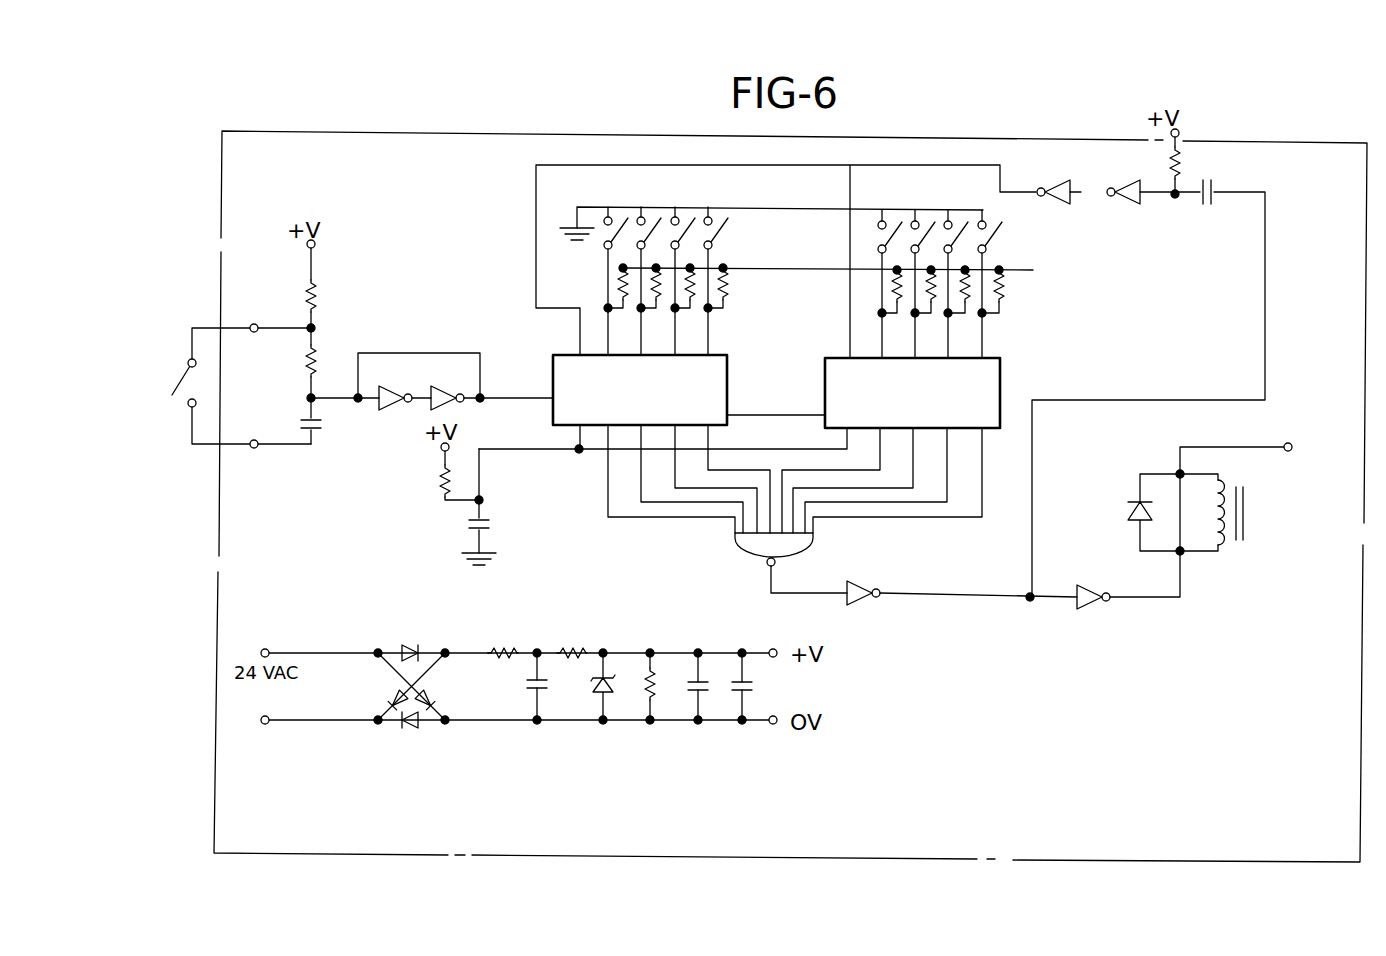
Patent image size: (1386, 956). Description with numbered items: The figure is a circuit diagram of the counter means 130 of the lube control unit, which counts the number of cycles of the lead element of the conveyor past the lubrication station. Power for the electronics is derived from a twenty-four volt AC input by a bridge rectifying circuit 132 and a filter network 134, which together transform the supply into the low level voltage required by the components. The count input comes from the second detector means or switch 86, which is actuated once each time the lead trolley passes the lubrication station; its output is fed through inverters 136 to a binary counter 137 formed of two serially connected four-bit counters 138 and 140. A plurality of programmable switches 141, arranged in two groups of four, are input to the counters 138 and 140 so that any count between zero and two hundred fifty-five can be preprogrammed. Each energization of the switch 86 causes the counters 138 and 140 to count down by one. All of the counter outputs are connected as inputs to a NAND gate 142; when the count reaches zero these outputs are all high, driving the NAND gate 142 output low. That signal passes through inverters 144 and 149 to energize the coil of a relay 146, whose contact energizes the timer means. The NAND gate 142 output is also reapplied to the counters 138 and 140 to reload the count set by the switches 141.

The second detector means or switch 86 is at (172, 396).
The counter means 130 is at (920, 848).
The bridge rectifying circuit 132 is at (445, 688).
The filter network 134 is at (663, 696).
The inverters 136 is at (418, 357).
The binary counter 137 is at (745, 384).
The 4-bit counter 138 is at (553, 366).
The 4-bit counter 140 is at (825, 362).
The programmable switches 141 is at (720, 228).
The NAND gate 142 is at (746, 555).
The inverter 144 is at (852, 603).
The relay coil 146 is at (1222, 543).
The inverter 149 is at (1088, 607).